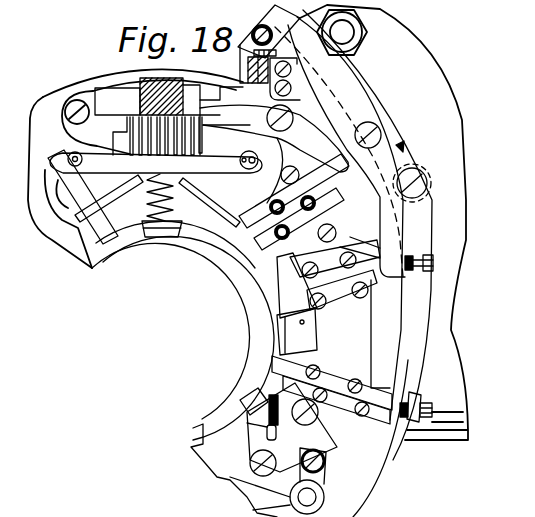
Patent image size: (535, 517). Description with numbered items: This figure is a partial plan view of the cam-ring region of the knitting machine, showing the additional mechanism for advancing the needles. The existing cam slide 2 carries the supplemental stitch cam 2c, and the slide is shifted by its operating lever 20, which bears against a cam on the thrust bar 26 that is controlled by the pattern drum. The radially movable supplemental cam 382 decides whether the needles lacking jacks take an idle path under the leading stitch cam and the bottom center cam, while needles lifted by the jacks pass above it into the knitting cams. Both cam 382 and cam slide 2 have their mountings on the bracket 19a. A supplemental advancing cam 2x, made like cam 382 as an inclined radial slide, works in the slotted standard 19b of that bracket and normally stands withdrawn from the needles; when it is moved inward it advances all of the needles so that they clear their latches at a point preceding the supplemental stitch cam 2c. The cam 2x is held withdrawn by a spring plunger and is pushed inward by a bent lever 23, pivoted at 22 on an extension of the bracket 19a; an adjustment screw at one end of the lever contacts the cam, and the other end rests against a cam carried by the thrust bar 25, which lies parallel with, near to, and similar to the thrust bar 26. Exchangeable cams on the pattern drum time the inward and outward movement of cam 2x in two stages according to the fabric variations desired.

The cam slide 2 is at (293, 290).
The supplemental stitch cam 2c is at (293, 330).
The supplemental advancing cam 2x is at (290, 367).
The bracket 19a is at (345, 230).
The slotted standard 19b is at (383, 348).
The operating lever 20 is at (355, 110).
The pivot 22 is at (360, 176).
The bent lever 23 is at (358, 84).
The thrust bar 25 is at (270, 60).
The thrust bar 26 is at (243, 67).
The supplemental cam 382 is at (228, 252).